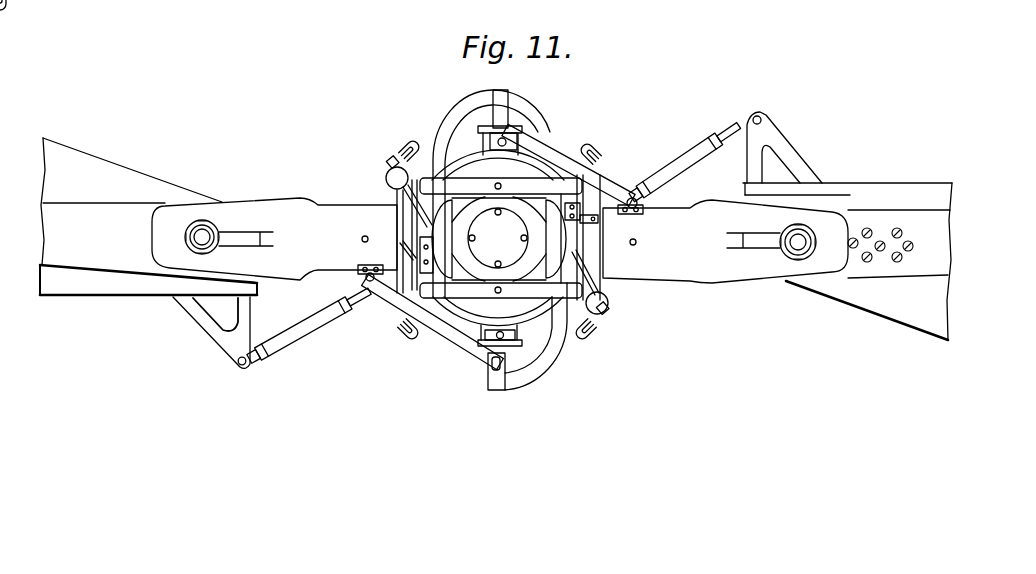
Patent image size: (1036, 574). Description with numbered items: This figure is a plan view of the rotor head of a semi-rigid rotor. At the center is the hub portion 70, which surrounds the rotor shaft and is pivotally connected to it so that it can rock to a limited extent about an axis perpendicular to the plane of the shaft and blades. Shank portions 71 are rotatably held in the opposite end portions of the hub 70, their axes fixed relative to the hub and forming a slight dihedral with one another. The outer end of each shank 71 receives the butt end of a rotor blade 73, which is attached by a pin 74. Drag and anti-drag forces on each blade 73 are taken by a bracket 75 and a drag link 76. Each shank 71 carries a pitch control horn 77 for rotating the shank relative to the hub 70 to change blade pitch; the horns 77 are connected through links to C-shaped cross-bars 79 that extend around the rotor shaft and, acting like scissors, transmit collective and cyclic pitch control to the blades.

The hub portion 70 is at (548, 184).
The shank portion 71 is at (345, 199).
The rotor blade 73 is at (896, 183).
The pin 74 is at (790, 262).
The bracket 75 is at (782, 150).
The drag link 76 is at (305, 330).
The pitch control horn 77 is at (452, 340).
The C-shaped cross-bar 79 is at (450, 140).